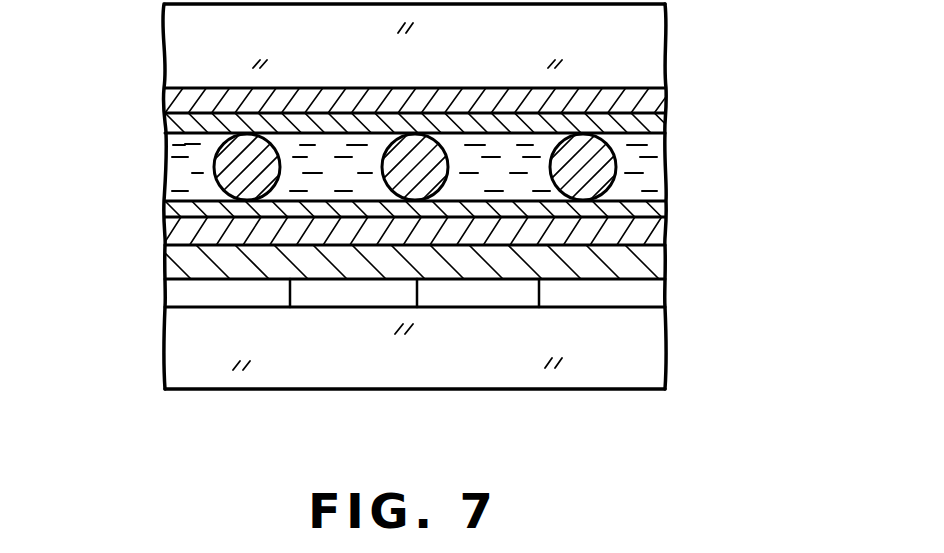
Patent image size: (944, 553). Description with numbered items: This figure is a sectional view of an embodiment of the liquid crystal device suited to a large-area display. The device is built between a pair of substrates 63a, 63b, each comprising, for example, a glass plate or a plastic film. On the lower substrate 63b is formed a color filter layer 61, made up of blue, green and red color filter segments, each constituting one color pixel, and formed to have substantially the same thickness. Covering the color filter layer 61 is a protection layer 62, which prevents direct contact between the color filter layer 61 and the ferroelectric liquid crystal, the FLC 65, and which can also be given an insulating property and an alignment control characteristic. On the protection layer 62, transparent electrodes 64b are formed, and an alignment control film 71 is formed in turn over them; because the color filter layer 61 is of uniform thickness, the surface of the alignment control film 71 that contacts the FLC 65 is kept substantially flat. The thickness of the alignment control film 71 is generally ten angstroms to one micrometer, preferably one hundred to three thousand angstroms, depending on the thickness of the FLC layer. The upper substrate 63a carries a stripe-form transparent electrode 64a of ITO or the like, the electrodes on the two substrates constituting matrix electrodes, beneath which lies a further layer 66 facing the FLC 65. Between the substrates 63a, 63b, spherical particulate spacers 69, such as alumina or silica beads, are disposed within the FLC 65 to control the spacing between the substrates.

The substrate 63a is at (648, 45).
The transparent electrode 64a is at (655, 100).
The upper alignment layer 66 is at (657, 125).
The FLC 65 is at (175, 146).
The particulate spacer 69 is at (227, 163).
The alignment control film 71 is at (657, 212).
The transparent electrode 64b is at (660, 230).
The protection layer 62 is at (655, 260).
The color filter layer 61 is at (652, 292).
The substrate 63b is at (652, 353).